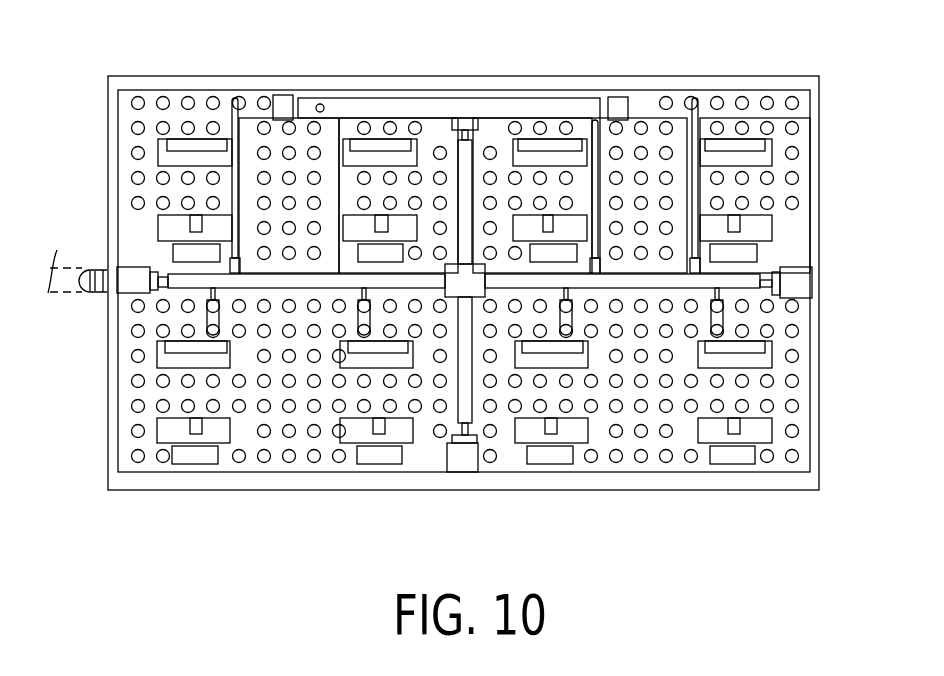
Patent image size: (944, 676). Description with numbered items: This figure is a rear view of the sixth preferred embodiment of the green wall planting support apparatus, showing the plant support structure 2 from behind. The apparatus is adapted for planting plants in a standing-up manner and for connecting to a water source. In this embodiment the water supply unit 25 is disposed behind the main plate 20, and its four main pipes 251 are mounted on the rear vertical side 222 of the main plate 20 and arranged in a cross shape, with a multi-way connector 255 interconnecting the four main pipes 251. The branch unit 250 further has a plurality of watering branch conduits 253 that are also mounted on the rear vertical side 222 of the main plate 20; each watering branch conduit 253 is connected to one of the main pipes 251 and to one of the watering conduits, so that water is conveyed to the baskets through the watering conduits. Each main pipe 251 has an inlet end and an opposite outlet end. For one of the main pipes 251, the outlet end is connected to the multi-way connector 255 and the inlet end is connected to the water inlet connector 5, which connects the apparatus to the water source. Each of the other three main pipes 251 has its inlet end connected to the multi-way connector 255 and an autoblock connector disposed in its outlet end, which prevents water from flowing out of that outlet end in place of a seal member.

The plant support structure 2 is at (699, 57).
The main plate 20 is at (766, 88).
The water inlet connector 5 is at (78, 266).
The water supply unit 25 is at (492, 122).
The branch unit 250 is at (256, 99).
The main pipe 251 is at (462, 183).
The watering branch conduit 253 is at (233, 187).
The multi-way connector 255 is at (460, 292).
The rear vertical side 222 is at (632, 437).